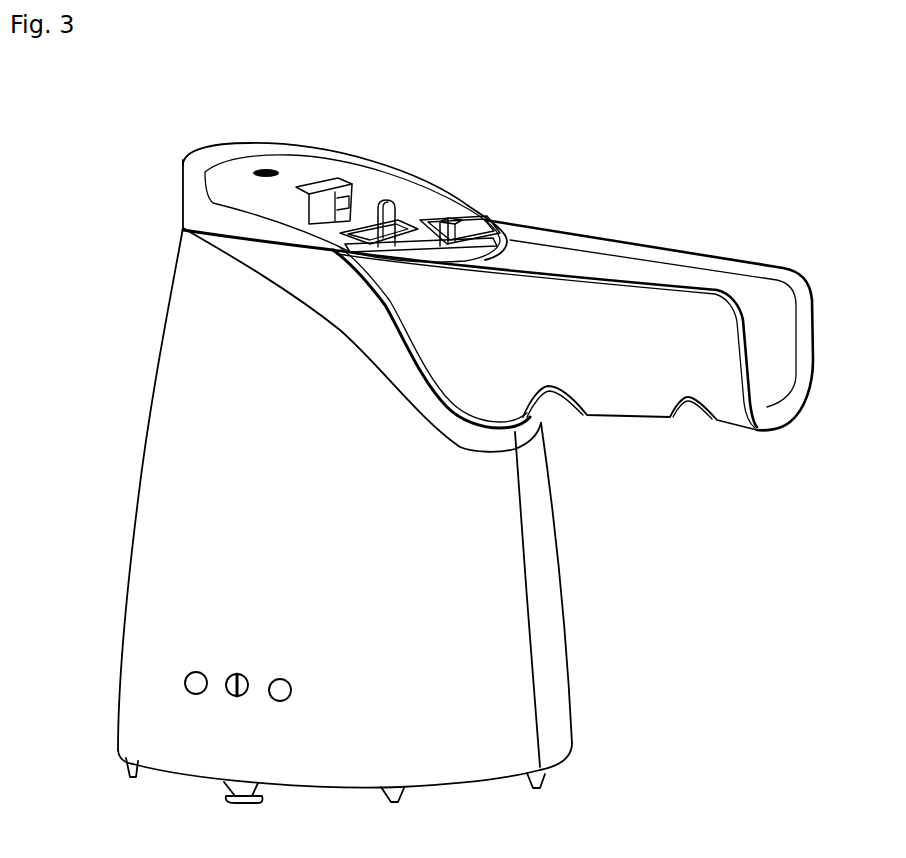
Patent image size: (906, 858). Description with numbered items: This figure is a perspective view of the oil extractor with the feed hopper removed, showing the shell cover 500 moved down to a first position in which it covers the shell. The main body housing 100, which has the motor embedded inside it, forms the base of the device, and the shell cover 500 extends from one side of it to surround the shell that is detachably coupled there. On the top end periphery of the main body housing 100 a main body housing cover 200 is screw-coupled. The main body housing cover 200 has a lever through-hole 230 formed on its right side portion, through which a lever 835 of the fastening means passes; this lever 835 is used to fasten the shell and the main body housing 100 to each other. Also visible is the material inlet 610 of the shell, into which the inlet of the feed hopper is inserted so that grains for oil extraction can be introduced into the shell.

The main body housing 100 is at (143, 441).
The main body housing cover 200 is at (363, 197).
The lever through-hole 230 is at (420, 233).
The shell cover 500 is at (668, 200).
The material inlet 610 is at (453, 228).
The lever 835 is at (381, 231).